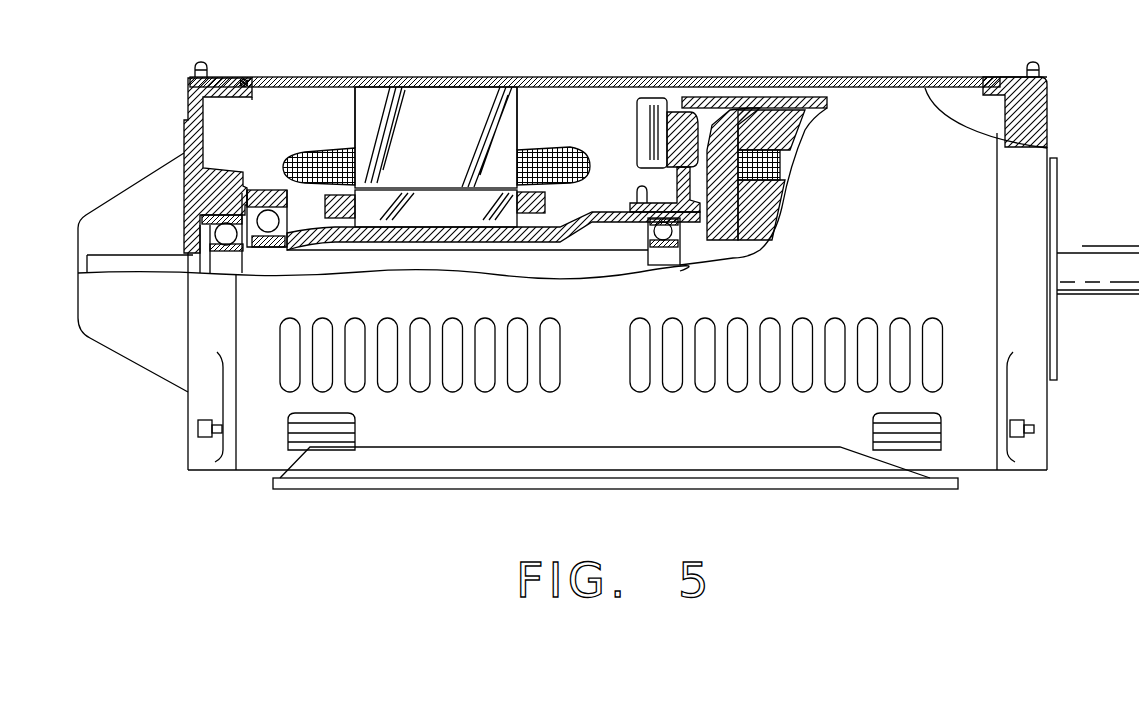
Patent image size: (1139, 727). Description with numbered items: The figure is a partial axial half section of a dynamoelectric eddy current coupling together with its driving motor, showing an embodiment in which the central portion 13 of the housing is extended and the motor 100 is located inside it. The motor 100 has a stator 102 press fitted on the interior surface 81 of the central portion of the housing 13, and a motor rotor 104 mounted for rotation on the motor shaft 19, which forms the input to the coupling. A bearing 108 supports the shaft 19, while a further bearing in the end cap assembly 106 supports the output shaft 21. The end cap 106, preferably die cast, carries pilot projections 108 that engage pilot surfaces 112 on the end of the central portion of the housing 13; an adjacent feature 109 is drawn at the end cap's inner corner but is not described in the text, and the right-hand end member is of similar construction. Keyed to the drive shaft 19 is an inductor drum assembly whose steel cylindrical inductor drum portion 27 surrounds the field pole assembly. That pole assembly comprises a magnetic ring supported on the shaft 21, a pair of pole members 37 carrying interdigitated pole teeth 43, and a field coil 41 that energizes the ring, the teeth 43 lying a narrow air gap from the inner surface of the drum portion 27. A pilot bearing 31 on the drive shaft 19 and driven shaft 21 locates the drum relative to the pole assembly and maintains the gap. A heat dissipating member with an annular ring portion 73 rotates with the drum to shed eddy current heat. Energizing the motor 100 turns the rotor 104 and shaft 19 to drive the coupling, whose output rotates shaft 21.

The central portion of the housing 13 is at (455, 80).
The drive shaft 19 is at (578, 230).
The driven shaft 21 is at (462, 258).
The cylindrical inductor drum portion 27 is at (795, 100).
The pilot bearing 31 is at (666, 248).
The pole member 37 is at (758, 238).
The field coil 41 is at (780, 160).
The pole teeth 43 is at (768, 125).
The annular ring portion 73 is at (645, 115).
The interior surface 81 is at (582, 92).
The motor 100 is at (222, 233).
The stator 102 is at (427, 105).
The motor rotor 104 is at (457, 203).
The end cap assembly 106 is at (226, 88).
The bearing 108 is at (268, 212).
The recess 109 is at (252, 97).
The pilot surfaces 112 is at (248, 80).